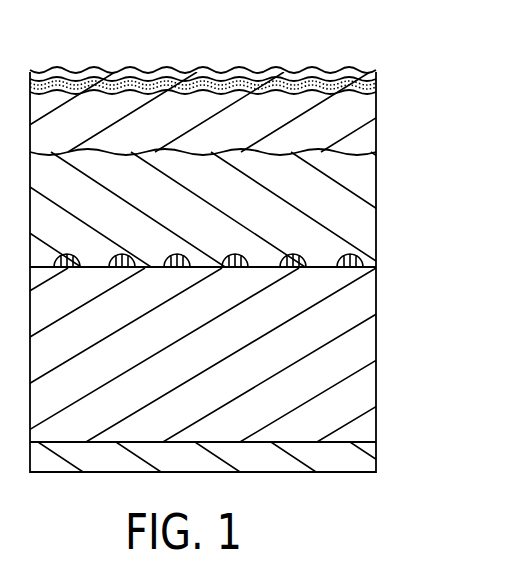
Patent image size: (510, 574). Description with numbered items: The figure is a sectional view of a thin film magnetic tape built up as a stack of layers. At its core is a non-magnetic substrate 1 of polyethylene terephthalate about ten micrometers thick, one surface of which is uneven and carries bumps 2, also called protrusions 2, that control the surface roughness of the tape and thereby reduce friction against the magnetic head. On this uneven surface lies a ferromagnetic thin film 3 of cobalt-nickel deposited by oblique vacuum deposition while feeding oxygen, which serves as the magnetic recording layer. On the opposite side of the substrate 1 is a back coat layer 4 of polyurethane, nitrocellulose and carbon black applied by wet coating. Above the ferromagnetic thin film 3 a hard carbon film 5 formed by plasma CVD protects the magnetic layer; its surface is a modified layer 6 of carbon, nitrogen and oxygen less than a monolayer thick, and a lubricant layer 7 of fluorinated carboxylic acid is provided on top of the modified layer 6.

The non-magnetic substrate 1 is at (366, 379).
The bumps 2 is at (360, 262).
The ferromagnetic thin film 3 is at (370, 211).
The back coat layer 4 is at (365, 465).
The hard carbon film 5 is at (366, 129).
The modified layer 6 is at (376, 89).
The lubricant layer 7 is at (356, 68).